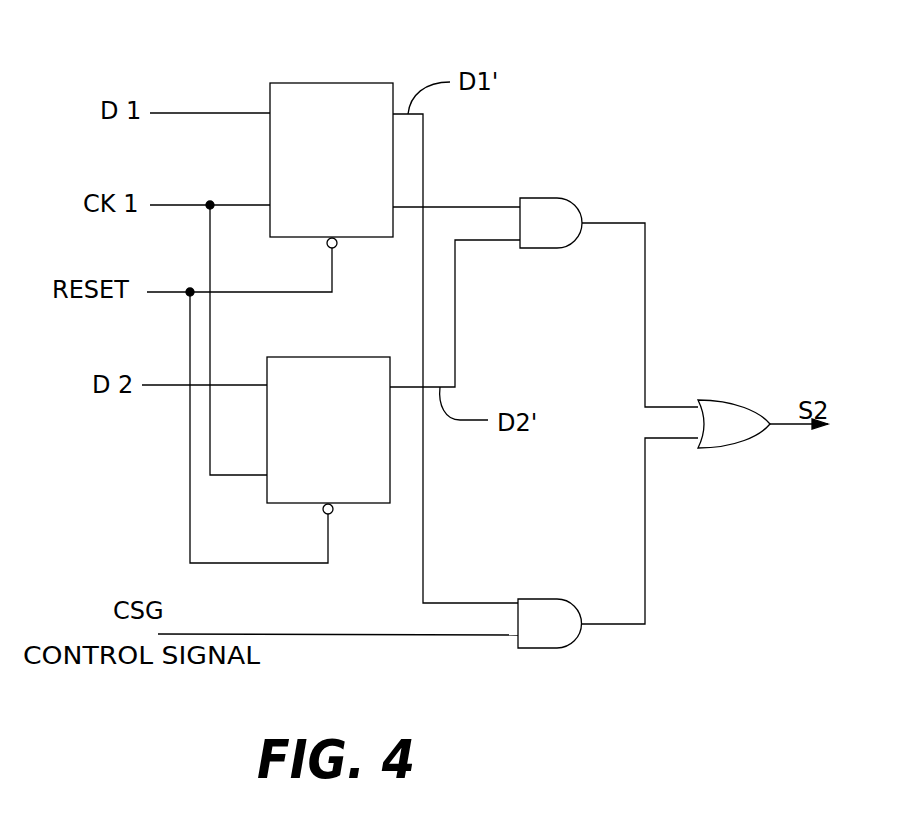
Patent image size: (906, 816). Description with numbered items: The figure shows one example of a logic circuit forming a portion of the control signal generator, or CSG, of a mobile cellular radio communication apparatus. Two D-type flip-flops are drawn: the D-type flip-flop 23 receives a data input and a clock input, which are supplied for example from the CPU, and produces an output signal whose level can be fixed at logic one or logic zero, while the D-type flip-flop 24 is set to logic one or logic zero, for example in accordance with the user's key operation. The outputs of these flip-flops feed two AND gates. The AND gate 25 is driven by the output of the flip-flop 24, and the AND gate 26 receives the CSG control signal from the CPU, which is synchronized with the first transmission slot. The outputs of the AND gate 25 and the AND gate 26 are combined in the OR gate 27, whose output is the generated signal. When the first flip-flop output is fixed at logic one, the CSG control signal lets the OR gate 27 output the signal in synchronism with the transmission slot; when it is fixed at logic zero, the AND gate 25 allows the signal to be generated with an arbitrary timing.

The D-type flip-flop 23 is at (323, 83).
The D-type flip-flop 24 is at (322, 357).
The AND gate 25 is at (535, 197).
The AND gate 26 is at (538, 599).
The OR gate 27 is at (715, 400).